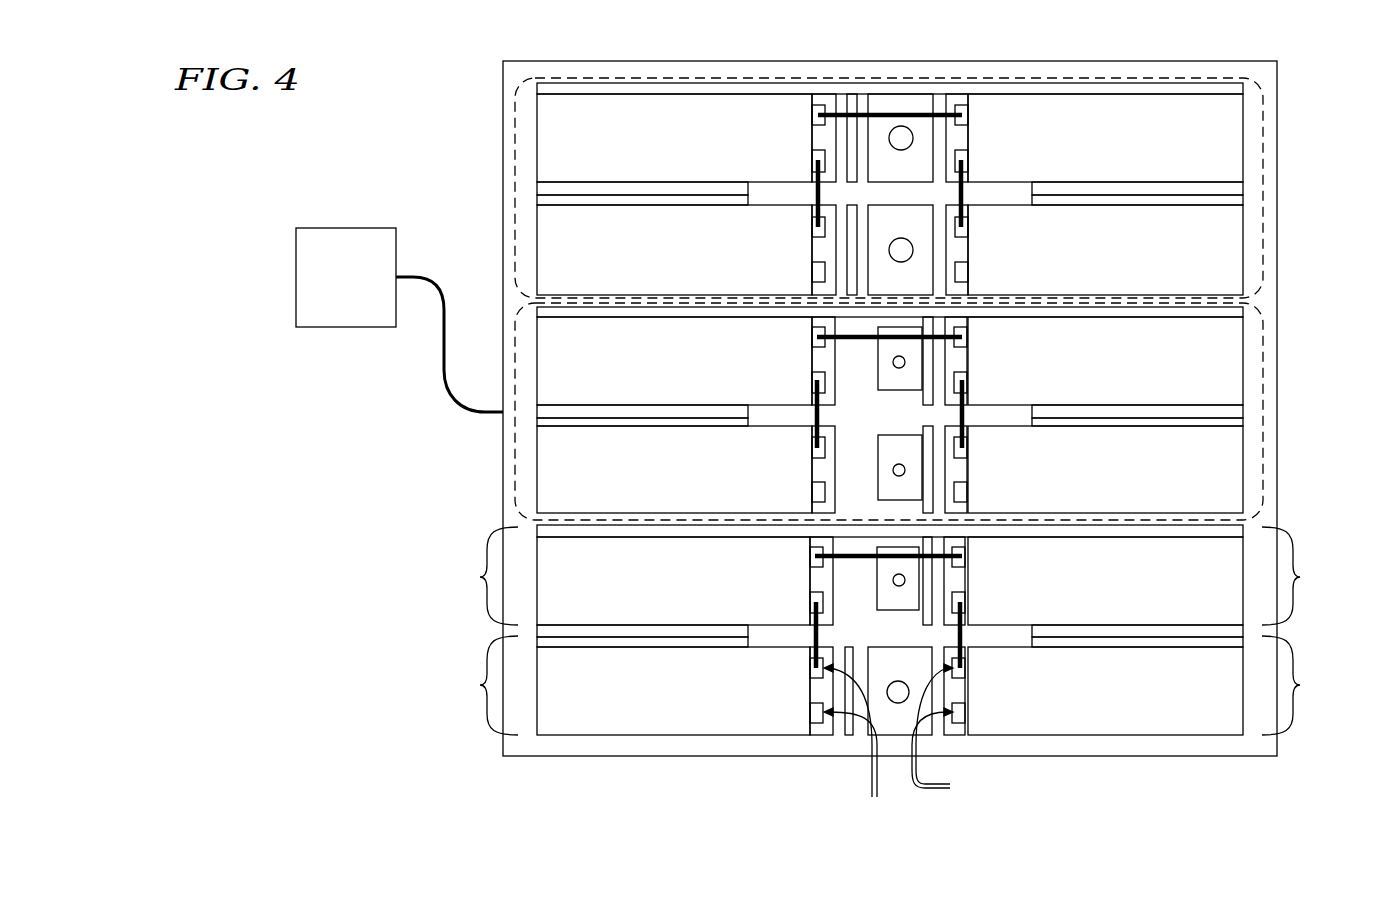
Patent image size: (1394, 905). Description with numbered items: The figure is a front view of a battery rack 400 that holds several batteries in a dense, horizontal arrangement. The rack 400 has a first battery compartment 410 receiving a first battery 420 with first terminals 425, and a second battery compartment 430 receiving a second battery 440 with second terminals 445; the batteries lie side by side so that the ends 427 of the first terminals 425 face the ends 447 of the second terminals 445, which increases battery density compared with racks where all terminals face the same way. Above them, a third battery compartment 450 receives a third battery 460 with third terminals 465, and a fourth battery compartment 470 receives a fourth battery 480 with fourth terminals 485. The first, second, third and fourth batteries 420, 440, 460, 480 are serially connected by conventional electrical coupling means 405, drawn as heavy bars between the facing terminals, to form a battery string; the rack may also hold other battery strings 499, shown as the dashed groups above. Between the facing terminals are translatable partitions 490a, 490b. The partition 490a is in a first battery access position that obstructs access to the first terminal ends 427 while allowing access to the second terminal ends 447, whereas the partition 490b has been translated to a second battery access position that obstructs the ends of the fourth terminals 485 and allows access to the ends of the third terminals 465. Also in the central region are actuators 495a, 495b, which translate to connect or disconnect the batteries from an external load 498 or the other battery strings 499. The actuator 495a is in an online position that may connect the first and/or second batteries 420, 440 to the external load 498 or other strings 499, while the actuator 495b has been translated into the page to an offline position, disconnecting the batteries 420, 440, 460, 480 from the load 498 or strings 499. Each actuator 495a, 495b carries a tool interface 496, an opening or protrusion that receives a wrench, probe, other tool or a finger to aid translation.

The battery rack 400 is at (1203, 61).
The electrical coupling means 405 is at (922, 113).
The first battery compartment 410 is at (480, 685).
The first battery 420 is at (582, 721).
The first terminals 425 is at (810, 673).
The ends of the first terminals 427 is at (855, 746).
The second battery compartment 430 is at (1300, 685).
The second battery 440 is at (1222, 721).
The second terminals 445 is at (966, 673).
The ends of the second terminals 447 is at (946, 730).
The third battery compartment 450 is at (480, 577).
The third battery 460 is at (582, 610).
The third terminals 465 is at (810, 556).
The fourth battery compartment 470 is at (1300, 577).
The fourth battery 480 is at (1222, 610).
The fourth terminals 485 is at (965, 556).
The partition 490a is at (847, 736).
The partition 490b is at (932, 578).
The actuator 495a is at (900, 736).
The actuator 495b is at (900, 610).
The tool interface 496 is at (905, 362).
The external load 498 is at (340, 228).
The other battery strings 499 is at (1263, 186).